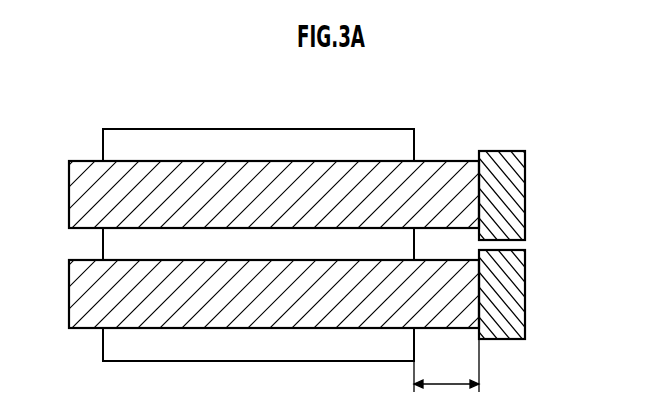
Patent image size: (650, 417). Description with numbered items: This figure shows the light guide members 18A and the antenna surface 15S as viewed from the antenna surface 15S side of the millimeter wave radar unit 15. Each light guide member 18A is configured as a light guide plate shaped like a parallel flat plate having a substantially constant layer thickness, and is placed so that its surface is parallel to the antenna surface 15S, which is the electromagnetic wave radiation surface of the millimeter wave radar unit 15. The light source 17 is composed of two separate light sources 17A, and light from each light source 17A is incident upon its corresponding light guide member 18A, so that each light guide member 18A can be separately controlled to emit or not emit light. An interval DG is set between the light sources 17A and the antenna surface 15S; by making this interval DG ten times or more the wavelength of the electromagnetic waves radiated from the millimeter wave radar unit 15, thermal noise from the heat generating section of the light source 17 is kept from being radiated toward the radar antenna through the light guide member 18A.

The millimeter wave radar unit 15 is at (384, 129).
The antenna surface 15S is at (159, 138).
The light guide member 18A is at (79, 161).
The light source 17 is at (554, 250).
The light source 17A is at (525, 208).
The interval DG is at (446, 375).